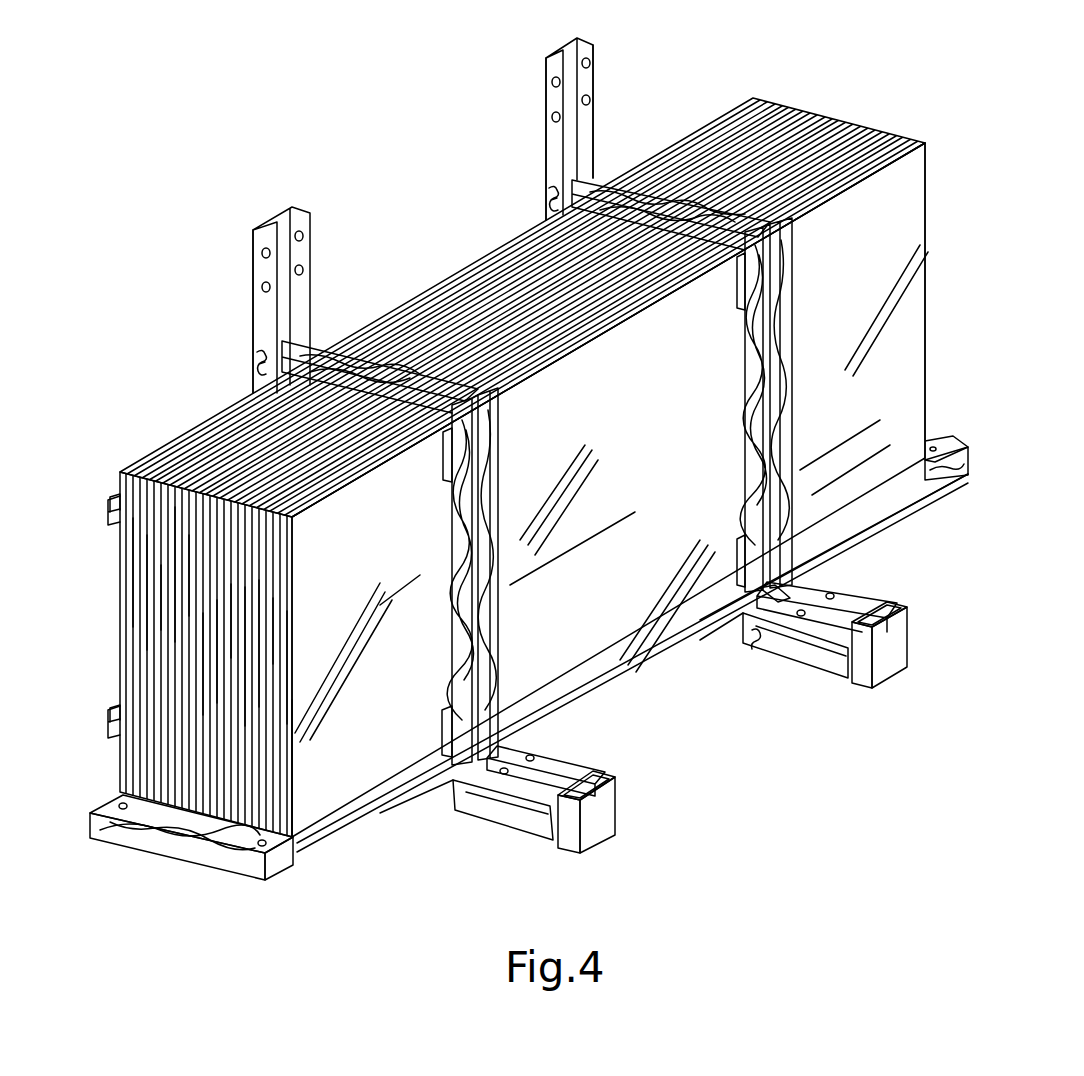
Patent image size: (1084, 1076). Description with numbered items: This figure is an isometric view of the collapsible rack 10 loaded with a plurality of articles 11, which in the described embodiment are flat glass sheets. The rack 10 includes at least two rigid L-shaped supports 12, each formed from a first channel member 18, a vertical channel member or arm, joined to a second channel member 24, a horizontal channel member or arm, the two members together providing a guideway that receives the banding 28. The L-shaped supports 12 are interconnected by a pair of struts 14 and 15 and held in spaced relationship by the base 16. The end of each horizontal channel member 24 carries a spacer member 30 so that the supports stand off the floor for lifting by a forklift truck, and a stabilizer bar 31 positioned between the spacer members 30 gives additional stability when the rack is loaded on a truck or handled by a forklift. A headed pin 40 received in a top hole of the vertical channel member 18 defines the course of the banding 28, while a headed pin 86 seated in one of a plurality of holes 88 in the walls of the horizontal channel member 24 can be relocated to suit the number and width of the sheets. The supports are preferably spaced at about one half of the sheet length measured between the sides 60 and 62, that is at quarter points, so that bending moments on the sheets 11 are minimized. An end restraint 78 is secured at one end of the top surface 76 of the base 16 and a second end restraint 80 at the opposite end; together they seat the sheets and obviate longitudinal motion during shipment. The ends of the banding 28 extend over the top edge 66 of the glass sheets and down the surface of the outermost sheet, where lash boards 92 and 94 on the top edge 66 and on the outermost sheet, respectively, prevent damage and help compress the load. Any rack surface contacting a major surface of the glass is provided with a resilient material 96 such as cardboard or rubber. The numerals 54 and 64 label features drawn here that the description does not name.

The rack 10 is at (610, 128).
The articles 11 is at (824, 114).
The L-shaped support 12 is at (612, 42).
The strut 14 is at (110, 504).
The strut 15 is at (110, 712).
The base 16 is at (632, 663).
The first channel member 18 is at (545, 154).
The second channel member 24 is at (574, 763).
The banding 28 is at (440, 578).
The spacer member 30 is at (612, 803).
The stabilizer bar 31 is at (495, 815).
The headed pin 40 is at (547, 208).
The fastener 54 is at (258, 372).
The side 60 is at (925, 175).
The side 62 is at (292, 745).
The longitudinal rail 64 is at (590, 683).
The top edge 66 is at (596, 342).
The top surface 76 is at (918, 498).
The end restraint 78 is at (957, 441).
The end restraint 80 is at (290, 858).
The headed pin 86 is at (793, 580).
The holes 88 is at (803, 612).
The lash board 92 is at (604, 183).
The lash board 94 is at (497, 488).
The resilient material 96 is at (442, 470).